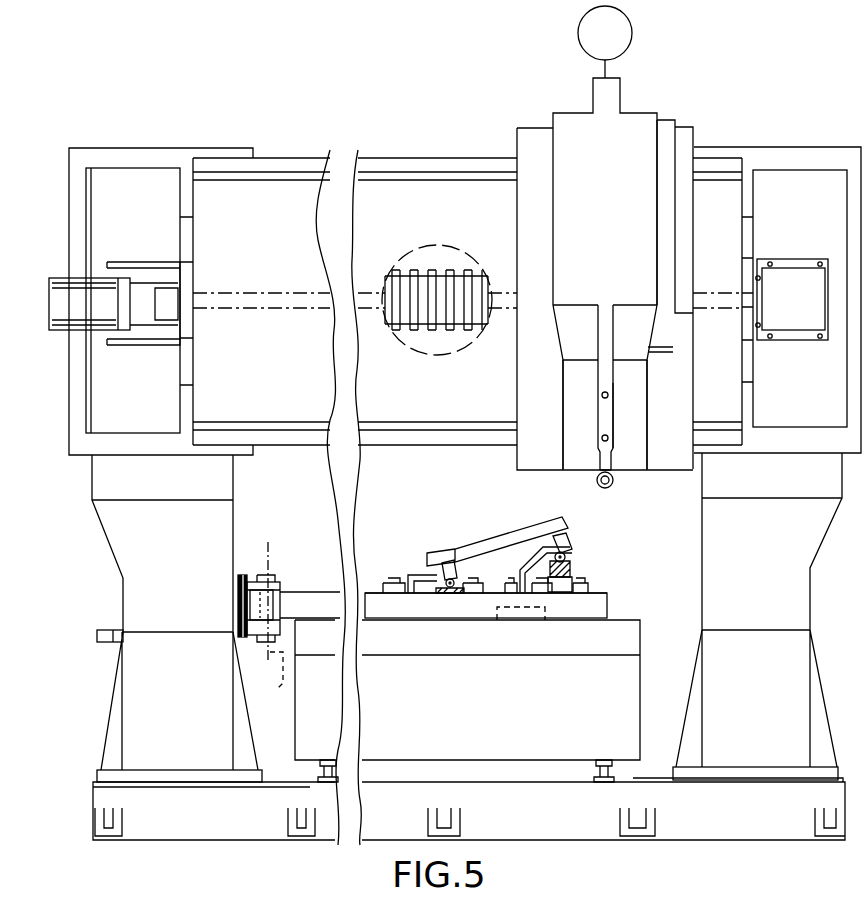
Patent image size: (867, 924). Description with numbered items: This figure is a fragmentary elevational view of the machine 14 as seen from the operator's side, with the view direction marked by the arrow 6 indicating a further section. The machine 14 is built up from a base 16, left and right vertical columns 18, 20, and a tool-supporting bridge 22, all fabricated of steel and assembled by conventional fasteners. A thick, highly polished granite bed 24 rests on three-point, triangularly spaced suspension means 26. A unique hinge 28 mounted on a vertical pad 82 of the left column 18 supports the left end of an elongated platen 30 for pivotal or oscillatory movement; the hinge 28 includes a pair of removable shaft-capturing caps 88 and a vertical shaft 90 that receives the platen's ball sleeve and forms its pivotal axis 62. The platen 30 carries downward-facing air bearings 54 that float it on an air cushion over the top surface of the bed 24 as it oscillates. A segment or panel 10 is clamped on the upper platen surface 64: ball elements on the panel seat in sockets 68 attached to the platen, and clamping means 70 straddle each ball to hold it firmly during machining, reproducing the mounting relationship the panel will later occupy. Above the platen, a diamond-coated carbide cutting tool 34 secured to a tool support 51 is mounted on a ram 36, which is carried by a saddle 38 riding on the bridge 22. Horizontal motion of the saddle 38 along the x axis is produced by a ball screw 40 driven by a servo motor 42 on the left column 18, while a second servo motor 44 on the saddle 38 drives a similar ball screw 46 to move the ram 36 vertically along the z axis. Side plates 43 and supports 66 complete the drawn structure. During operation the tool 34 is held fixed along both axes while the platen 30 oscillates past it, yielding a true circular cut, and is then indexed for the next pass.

The section line indicator 6 is at (448, 88).
The segment 10 is at (520, 530).
The machine 14 is at (243, 74).
The base 16 is at (220, 832).
The left vertical column 18 is at (140, 588).
The right vertical column 20 is at (805, 580).
The tool-supporting bridge 22 is at (433, 158).
The granite bed 24 is at (497, 708).
The suspension means 26 is at (340, 772).
The hinge 28 is at (282, 538).
The platen 30 is at (607, 605).
The cutting tool 34 is at (615, 485).
The ram 36 is at (570, 200).
The saddle 38 is at (533, 128).
The ball screw 40 is at (275, 268).
The servo motor 42 is at (64, 278).
The carriage plates 43 is at (680, 403).
The motor 44 is at (633, 33).
The ball screw 46 is at (612, 66).
The tool support 51 is at (598, 418).
The air bearing 54 is at (488, 620).
The pivotal axis 62 is at (286, 680).
The platen surface 64 is at (372, 593).
The workpiece supports 66 is at (472, 552).
The socket 68 is at (572, 568).
The clamping means 70 is at (410, 570).
The vertical pad 82 is at (246, 565).
The shaft-capturing cap 88 is at (280, 590).
The vertical shaft 90 is at (260, 640).